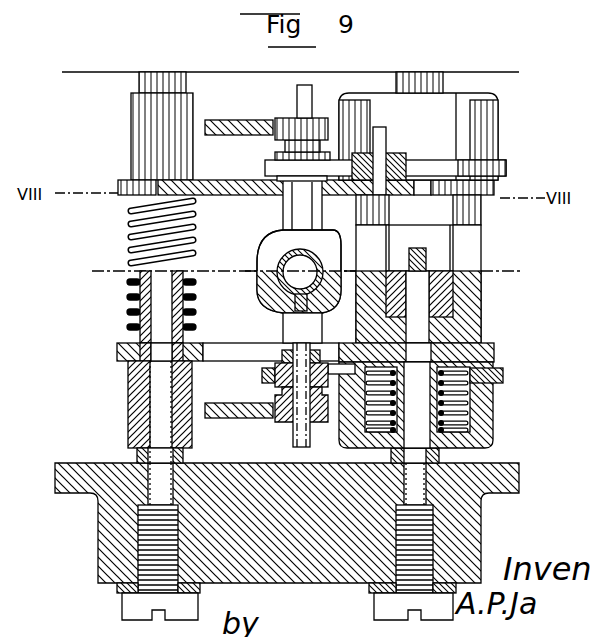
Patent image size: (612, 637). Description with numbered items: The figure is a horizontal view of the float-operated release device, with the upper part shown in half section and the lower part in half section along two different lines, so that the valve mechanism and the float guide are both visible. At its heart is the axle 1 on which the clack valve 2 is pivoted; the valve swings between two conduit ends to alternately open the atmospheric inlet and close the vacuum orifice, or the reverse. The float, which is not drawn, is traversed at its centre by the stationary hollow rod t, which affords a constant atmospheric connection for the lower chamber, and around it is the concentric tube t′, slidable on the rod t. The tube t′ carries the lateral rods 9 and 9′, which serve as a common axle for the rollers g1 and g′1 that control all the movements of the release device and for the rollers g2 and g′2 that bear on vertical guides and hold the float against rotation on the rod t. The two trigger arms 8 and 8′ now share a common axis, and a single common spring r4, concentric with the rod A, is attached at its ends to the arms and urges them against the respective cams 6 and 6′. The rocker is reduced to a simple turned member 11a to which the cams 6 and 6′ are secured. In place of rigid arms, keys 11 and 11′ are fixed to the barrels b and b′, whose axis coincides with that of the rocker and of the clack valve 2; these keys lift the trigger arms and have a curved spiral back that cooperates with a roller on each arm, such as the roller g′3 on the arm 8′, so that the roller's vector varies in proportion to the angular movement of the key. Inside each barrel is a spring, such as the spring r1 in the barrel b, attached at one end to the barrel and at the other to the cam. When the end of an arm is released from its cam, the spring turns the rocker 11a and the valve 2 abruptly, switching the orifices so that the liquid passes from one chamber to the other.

The axle 1 is at (440, 458).
The clack valve 2 is at (426, 262).
The cam 6 is at (494, 352).
The cam 6′ is at (494, 191).
The trigger arm 8 is at (220, 343).
The trigger arm 8′ is at (173, 265).
The lateral rod 9 is at (310, 403).
The lateral rod 9′ is at (311, 100).
The key 11 is at (266, 387).
The key 11′ is at (270, 172).
The rocker 11a is at (481, 296).
The rod A is at (150, 432).
The barrel b is at (493, 423).
The barrel b′ is at (498, 126).
The roller g1 is at (262, 375).
The roller g2 is at (275, 418).
The roller g′1 is at (276, 156).
The roller g′2 is at (276, 122).
The roller g′3 is at (404, 162).
The spring r1 is at (463, 397).
The common spring r4 is at (140, 248).
The hollow rod t is at (281, 262).
The tube t′ is at (288, 232).